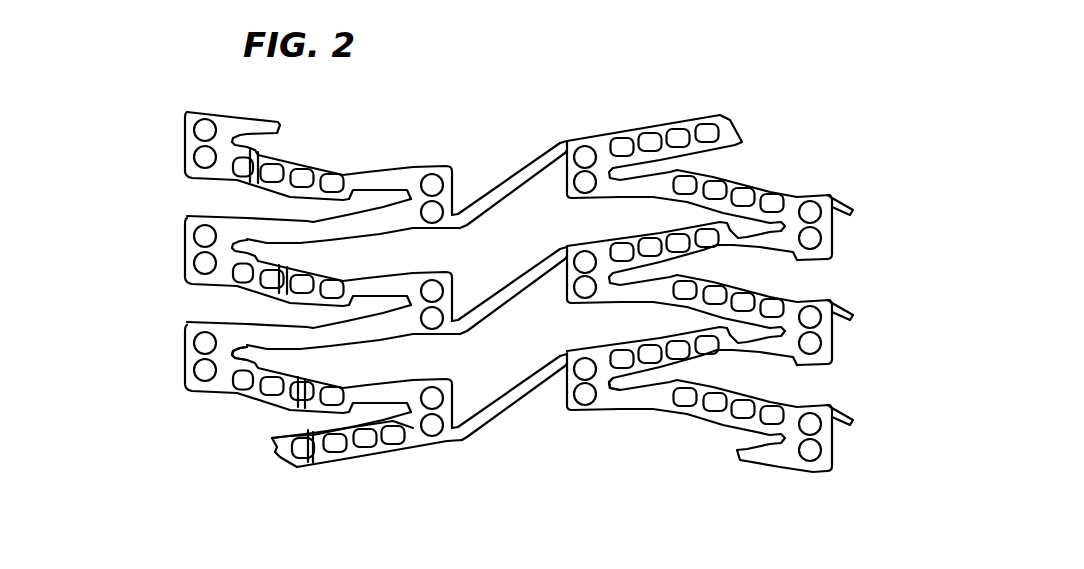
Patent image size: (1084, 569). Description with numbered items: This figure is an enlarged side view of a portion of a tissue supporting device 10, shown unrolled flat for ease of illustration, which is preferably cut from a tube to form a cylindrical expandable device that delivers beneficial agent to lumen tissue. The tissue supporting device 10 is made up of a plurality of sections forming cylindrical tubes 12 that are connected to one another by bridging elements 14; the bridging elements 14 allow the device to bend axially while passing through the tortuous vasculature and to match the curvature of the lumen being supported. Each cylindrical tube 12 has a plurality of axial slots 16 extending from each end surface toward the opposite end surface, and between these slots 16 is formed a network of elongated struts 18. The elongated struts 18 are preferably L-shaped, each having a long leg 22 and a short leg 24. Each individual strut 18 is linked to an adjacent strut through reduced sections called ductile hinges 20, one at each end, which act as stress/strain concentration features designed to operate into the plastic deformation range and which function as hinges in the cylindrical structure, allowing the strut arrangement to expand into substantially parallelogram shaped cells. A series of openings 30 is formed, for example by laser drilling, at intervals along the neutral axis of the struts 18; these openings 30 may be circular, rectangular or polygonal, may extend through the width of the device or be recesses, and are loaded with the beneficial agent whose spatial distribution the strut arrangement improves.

The tissue supporting device 10 is at (770, 83).
The cylindrical tube 12 is at (291, 479).
The bridging element 14 is at (483, 310).
The axial slot 16 is at (277, 318).
The elongated strut 18 is at (300, 213).
The ductile hinge 20 is at (248, 340).
The long leg 22 is at (760, 402).
The short leg 24 is at (828, 452).
The opening 30 is at (618, 135).